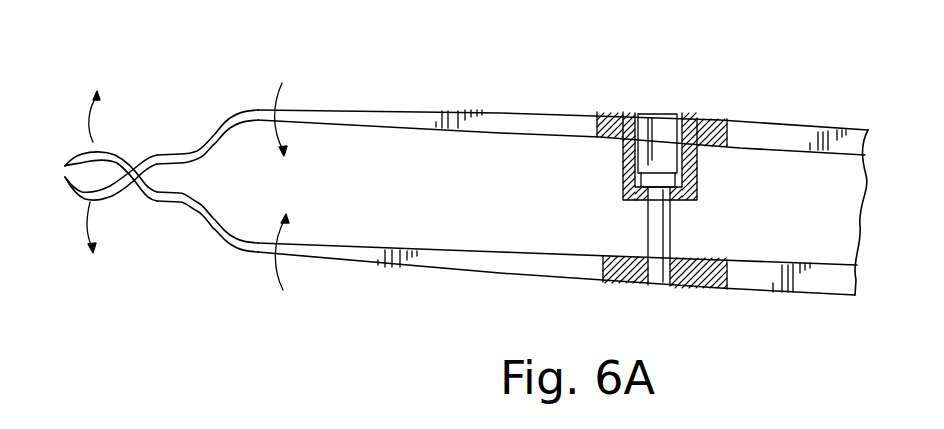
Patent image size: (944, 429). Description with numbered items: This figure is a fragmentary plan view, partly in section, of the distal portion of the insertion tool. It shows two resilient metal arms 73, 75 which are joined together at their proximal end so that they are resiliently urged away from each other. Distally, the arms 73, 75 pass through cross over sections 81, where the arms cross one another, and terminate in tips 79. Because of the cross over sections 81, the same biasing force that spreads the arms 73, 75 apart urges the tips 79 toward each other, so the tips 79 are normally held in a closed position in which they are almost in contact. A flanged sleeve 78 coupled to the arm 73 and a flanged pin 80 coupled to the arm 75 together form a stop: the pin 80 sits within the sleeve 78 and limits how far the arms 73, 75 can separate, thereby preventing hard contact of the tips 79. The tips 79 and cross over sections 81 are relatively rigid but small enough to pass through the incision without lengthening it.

The resilient metal arm 73 is at (770, 137).
The resilient metal arm 75 is at (787, 287).
The flanged sleeve 78 is at (697, 168).
The tips 79 is at (72, 157).
The flanged pin 80 is at (657, 217).
The cross over sections 81 is at (183, 148).